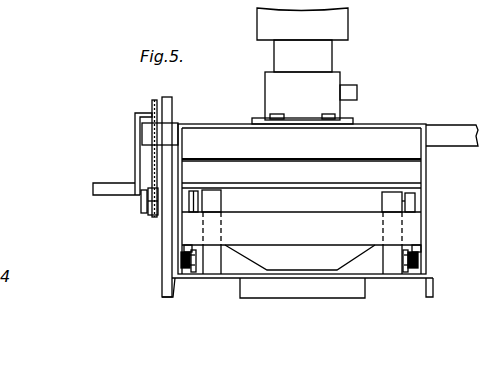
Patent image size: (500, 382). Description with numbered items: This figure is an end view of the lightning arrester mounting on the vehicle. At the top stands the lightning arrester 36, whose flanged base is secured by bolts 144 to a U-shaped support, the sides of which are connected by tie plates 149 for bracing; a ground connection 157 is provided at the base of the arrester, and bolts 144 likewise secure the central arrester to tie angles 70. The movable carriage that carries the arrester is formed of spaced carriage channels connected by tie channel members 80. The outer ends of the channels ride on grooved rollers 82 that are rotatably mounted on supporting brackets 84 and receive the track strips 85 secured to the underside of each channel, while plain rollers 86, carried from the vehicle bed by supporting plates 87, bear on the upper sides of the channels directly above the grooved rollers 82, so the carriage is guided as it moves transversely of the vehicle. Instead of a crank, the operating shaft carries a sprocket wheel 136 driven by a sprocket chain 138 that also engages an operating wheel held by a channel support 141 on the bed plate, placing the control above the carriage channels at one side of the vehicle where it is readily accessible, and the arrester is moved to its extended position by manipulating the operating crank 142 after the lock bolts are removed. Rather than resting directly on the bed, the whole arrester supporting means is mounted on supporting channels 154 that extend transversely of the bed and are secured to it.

The lightning arrester 36 is at (340, 23).
The ground connection 157 is at (357, 92).
The bolts 144 is at (325, 115).
The tie angles 70 is at (447, 133).
The tie plates 149 is at (413, 152).
The sprocket chain 138 is at (152, 163).
The operating crank 142 is at (92, 189).
The sprocket wheel 136 is at (148, 203).
The plain rollers 86 is at (198, 191).
The supporting plates 87 is at (220, 202).
The track strips 85 is at (187, 248).
The channel support 141 is at (163, 248).
The grooved rollers 82 is at (180, 258).
The supporting brackets 84 is at (180, 268).
The tie channel members 80 is at (305, 237).
The supporting channels 154 is at (237, 288).